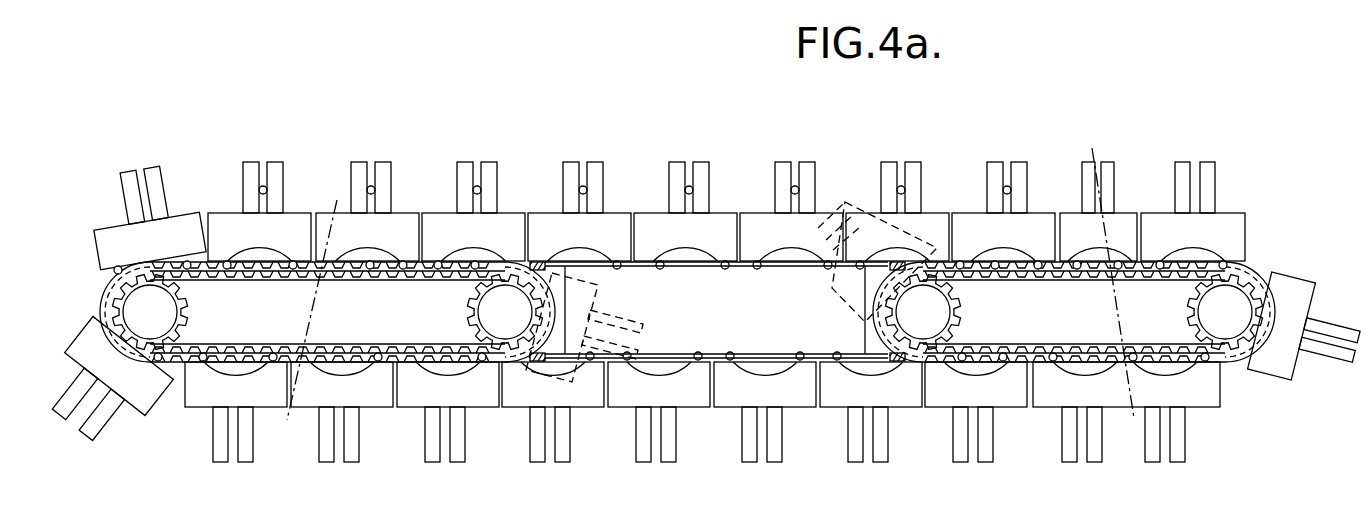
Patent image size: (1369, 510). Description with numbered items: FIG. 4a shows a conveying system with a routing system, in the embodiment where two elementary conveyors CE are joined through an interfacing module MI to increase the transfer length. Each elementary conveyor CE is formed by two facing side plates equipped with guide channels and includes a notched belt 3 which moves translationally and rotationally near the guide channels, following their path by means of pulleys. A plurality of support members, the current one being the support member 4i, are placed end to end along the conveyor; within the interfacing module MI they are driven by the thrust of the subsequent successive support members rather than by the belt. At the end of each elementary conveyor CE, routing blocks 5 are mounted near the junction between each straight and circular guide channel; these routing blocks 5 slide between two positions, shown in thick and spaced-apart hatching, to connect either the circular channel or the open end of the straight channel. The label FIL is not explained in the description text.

The notched belt 3 is at (132, 272).
The elementary conveyor CE is at (180, 367).
The wire FIL is at (473, 188).
The routing block 5 is at (537, 262).
The interfacing module MI is at (708, 310).
The support member 4i is at (1024, 238).